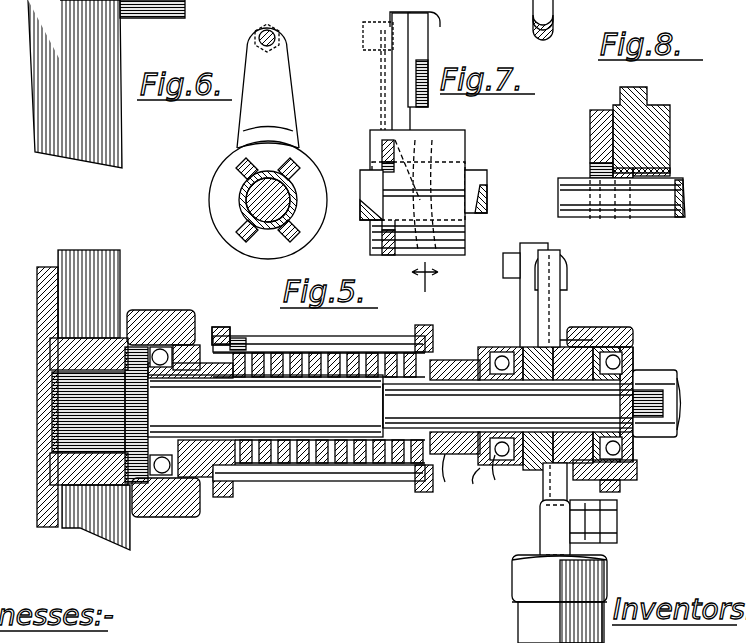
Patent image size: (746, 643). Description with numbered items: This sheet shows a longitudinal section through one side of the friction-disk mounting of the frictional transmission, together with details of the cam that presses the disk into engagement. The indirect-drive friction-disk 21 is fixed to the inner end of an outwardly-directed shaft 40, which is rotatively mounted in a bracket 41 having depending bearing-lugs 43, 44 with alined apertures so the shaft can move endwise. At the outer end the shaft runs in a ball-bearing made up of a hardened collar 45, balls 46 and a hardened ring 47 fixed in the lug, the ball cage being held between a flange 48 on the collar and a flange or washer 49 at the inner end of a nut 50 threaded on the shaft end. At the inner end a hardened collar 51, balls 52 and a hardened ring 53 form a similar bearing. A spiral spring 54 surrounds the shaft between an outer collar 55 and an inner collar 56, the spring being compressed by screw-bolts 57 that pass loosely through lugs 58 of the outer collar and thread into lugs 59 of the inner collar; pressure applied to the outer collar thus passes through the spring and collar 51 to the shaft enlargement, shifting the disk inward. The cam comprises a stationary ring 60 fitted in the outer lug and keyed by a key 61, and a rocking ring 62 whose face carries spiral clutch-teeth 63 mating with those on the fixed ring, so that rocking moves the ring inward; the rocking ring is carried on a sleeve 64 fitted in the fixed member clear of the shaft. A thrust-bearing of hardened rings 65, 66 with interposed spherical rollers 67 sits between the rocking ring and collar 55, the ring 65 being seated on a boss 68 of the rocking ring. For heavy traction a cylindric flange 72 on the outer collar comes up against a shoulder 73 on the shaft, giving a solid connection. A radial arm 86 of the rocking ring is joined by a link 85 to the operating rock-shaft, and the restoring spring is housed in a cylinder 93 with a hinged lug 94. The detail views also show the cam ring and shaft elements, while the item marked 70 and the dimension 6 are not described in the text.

In FIG. 5, the indirect-drive friction-disk 21 is at (60, 473).
In FIG. 5, the shaft 40 is at (126, 395).
In FIG. 6, the shaft 40 is at (303, 183).
In FIG. 7, the shaft 40 is at (357, 198).
In FIG. 8, the shaft 40 is at (562, 196).
In FIG. 5, the bracket 41 is at (618, 508).
In FIG. 5, the outer bearing-lug 43 is at (640, 470).
In FIG. 5, the inner bearing-lug 44 is at (184, 312).
In FIG. 5, the hardened collar 45 is at (634, 360).
In FIG. 5, the balls 46 is at (628, 330).
In FIG. 5, the hardened ring 47 is at (613, 350).
In FIG. 5, the flange 48 is at (622, 484).
In FIG. 5, the flange or washer 49 is at (635, 452).
In FIG. 5, the nut 50 is at (676, 372).
In FIG. 5, the hardened collar 51 is at (180, 378).
In FIG. 5, the balls 52 is at (170, 515).
In FIG. 5, the hardened ring 53 is at (160, 345).
In FIG. 5, the spiral spring 54 is at (330, 378).
In FIG. 5, the outer collar 55 is at (460, 360).
In FIG. 5, the inner collar 56 is at (205, 345).
In FIG. 5, the screw-bolt 57 is at (294, 497).
In FIG. 5, the lug or flange 58 is at (428, 492).
In FIG. 5, the lug or flange 59 is at (222, 490).
In FIG. 5, the stationary cam member or ring 60 is at (575, 347).
In FIG. 7, the stationary cam member or ring 60 is at (465, 148).
In FIG. 5, the key 61 is at (560, 342).
In FIG. 5, the rocking ring 62 is at (560, 465).
In FIG. 7, the rocking ring 62 is at (410, 254).
In FIG. 8, the rocking ring 62 is at (655, 110).
In FIG. 5, the spiral clutch-teeth 63 is at (570, 485).
In FIG. 5, the sleeve 64 is at (545, 495).
In FIG. 8, the sleeve 64 is at (670, 170).
In FIG. 5, the hardened ring 65 is at (508, 347).
In FIG. 6, the hardened ring 65 is at (232, 162).
In FIG. 7, the hardened ring 65 is at (375, 140).
In FIG. 8, the hardened ring 65 is at (598, 110).
In FIG. 5, the hardened ring 66 is at (480, 482).
In FIG. 5, the spherical rollers 67 is at (490, 484).
In FIG. 5, the boss or flange 68 is at (530, 332).
In FIG. 7, the boss or flange 68 is at (382, 232).
In FIG. 8, the boss or flange 68 is at (590, 152).
In FIG. 5, the collar 70 is at (455, 484).
In FIG. 5, the cylindric flange 72 is at (415, 330).
In FIG. 5, the shoulder 73 is at (392, 397).
In FIG. 5, the link 85 is at (560, 296).
In FIG. 7, the link 85 is at (430, 62).
In FIG. 8, the link 85 is at (533, 10).
In FIG. 5, the radial arm 86 is at (530, 250).
In FIG. 6, the radial arm 86 is at (275, 72).
In FIG. 7, the radial arm 86 is at (392, 78).
In FIG. 5, the cylinder 93 is at (518, 608).
In FIG. 5, the lug 94 is at (540, 528).
In FIG. 7, the dimension 6 is at (424, 277).